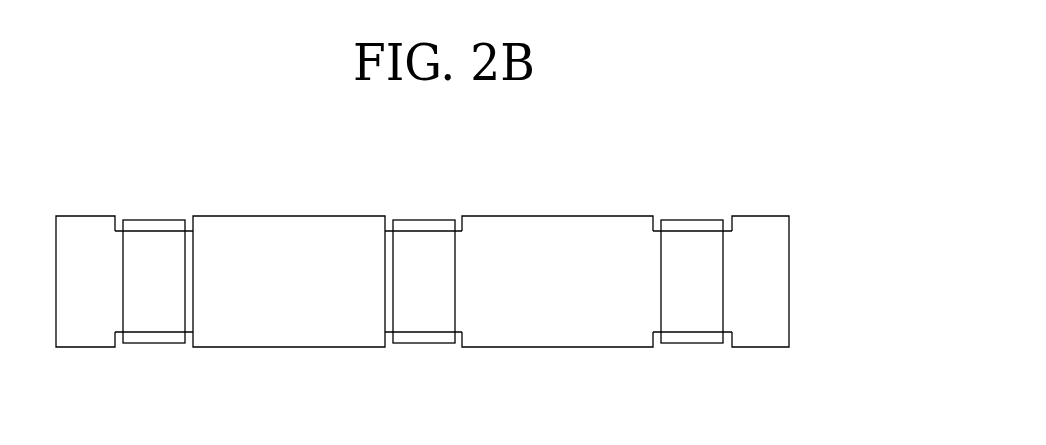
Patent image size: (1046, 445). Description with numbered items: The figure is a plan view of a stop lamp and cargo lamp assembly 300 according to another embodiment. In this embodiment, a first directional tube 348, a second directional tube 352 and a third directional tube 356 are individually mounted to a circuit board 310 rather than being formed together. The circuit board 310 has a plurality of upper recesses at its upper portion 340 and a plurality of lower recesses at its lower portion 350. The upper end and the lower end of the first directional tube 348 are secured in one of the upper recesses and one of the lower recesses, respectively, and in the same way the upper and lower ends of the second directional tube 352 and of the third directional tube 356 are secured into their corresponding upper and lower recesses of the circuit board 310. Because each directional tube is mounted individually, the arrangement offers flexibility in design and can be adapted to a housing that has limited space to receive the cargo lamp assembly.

The stop lamp and cargo lamp assembly 300 is at (467, 283).
The circuit board 310 is at (78, 349).
The upper portion 340 is at (287, 216).
The first directional tube 348 is at (162, 312).
The lower portion 350 is at (270, 348).
The second directional tube 352 is at (432, 312).
The third directional tube 356 is at (700, 312).